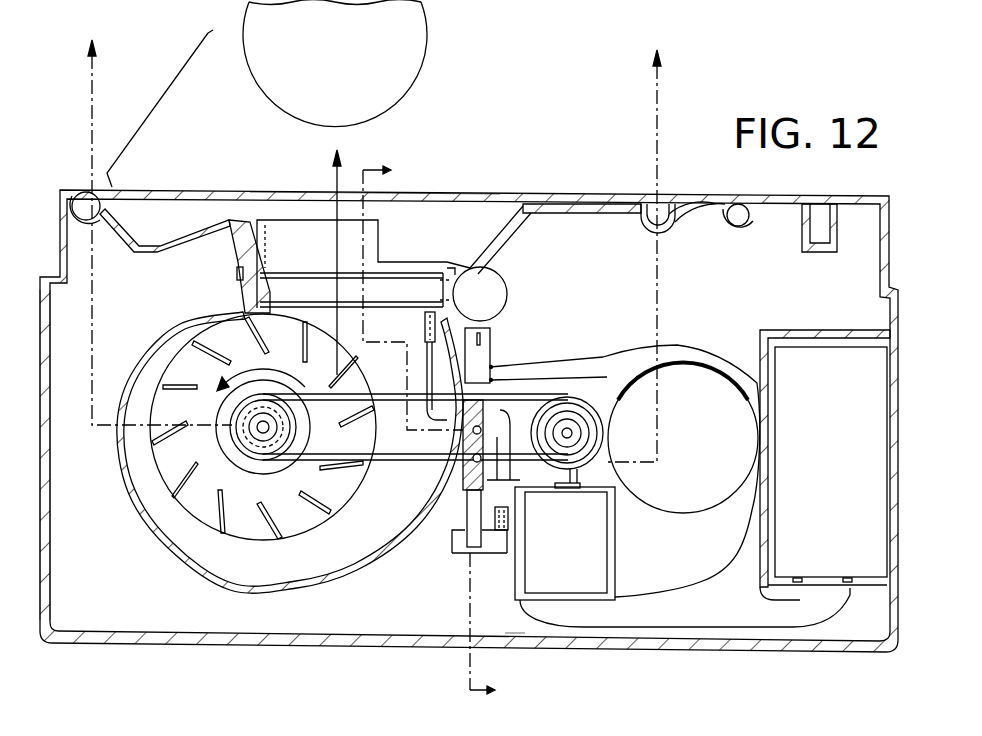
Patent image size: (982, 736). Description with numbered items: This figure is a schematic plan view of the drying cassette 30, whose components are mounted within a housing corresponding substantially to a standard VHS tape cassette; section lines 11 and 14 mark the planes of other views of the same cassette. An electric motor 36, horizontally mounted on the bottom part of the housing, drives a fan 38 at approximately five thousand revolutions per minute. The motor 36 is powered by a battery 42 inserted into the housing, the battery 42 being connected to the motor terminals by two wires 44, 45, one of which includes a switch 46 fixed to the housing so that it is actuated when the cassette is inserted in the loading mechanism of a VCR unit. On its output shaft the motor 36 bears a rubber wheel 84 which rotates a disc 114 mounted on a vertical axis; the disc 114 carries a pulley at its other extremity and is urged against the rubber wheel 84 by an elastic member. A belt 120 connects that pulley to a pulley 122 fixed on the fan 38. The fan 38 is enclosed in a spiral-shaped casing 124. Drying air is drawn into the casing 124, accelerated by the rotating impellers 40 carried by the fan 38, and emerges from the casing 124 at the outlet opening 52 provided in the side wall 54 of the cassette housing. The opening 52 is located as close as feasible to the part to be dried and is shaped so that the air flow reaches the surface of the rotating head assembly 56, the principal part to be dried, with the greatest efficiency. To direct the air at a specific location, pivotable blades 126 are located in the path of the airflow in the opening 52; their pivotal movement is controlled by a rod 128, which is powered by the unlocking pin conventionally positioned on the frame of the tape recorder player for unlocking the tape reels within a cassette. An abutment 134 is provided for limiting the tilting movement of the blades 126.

The section line 11- 11 is at (380, 235).
The section line 14- 14 is at (439, 432).
The drying cassette 30 is at (90, 662).
The electric motor 36 is at (595, 582).
The fan 38 is at (246, 520).
The impellers 40 is at (300, 528).
The battery 42 is at (857, 560).
The wire 44 is at (690, 583).
The wire 45 is at (777, 630).
The switch 46 is at (488, 346).
The outlet opening 52 is at (320, 205).
The side wall 54 is at (42, 283).
The rotating head assembly 56 is at (403, 79).
The rubber wheel 84 is at (538, 446).
The disc 114 is at (513, 633).
The belt 120 is at (415, 462).
The pulley 122 is at (240, 452).
The spiral-shaped casing 124 is at (297, 593).
The pivotable blades 126 is at (352, 247).
The rod 128 is at (425, 367).
The abutment 134 is at (240, 225).